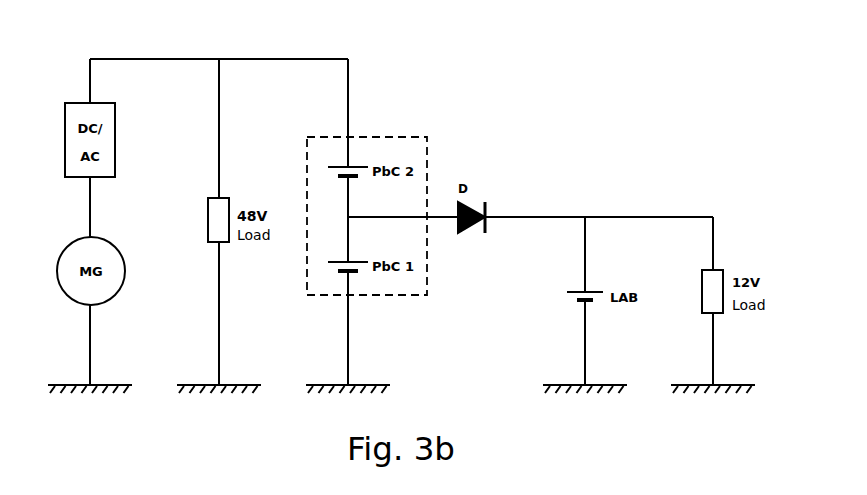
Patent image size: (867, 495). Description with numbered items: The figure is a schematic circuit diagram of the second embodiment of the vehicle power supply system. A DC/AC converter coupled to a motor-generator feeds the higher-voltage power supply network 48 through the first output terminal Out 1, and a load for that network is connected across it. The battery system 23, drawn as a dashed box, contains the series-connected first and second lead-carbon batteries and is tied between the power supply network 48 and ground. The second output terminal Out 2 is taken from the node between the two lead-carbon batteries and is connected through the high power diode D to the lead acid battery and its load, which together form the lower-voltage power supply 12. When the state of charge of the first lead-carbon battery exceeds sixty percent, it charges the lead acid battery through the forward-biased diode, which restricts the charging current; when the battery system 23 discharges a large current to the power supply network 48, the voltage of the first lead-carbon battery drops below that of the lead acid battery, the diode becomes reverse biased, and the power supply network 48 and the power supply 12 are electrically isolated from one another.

The battery system 23 is at (368, 298).
The first output terminal 1 is at (348, 100).
The second output terminal 2 is at (437, 217).
The 48V power supply network 48 is at (219, 49).
The 12V power supply 12 is at (599, 206).